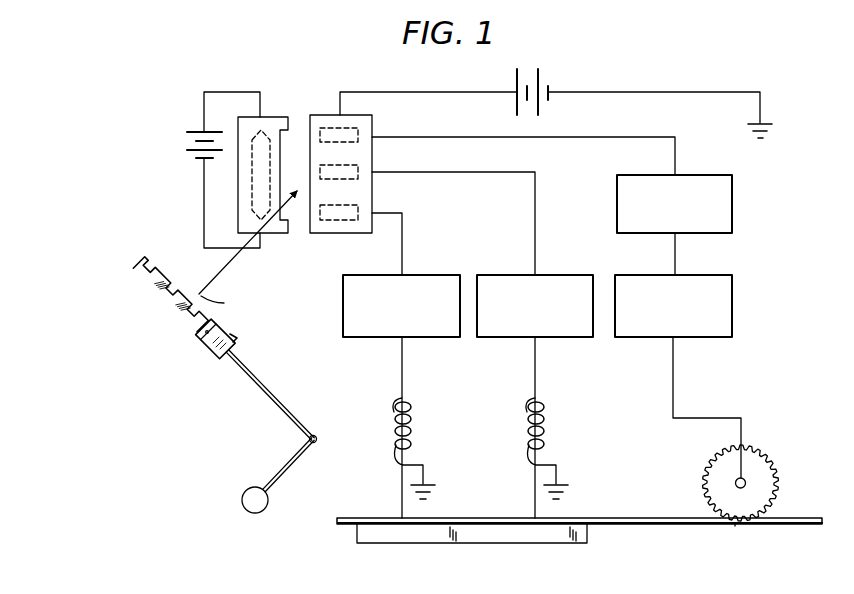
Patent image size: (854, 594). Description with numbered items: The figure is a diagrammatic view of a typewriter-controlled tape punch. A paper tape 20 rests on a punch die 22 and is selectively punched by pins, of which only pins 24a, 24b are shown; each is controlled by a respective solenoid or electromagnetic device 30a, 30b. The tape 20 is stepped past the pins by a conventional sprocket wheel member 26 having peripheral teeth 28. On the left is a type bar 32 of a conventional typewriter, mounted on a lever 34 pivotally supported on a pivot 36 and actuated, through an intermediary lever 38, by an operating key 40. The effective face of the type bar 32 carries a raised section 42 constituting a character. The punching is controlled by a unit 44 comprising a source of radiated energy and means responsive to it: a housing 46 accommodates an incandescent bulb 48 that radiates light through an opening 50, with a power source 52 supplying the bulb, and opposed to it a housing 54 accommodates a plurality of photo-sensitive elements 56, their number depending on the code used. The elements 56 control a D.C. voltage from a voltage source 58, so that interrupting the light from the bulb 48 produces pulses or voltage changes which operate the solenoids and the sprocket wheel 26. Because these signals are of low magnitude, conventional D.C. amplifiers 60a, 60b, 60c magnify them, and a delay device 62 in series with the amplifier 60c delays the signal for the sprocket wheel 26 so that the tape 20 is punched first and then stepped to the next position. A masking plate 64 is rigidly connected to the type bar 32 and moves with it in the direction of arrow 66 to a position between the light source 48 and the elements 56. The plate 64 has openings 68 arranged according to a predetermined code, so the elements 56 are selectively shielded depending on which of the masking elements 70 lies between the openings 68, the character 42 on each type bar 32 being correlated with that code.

The paper tape 20 is at (347, 525).
The punch die 22 is at (516, 543).
The pin 24a is at (401, 507).
The pin 24b is at (534, 507).
The sprocket wheel member 26 is at (775, 482).
The peripheral teeth 28 is at (762, 461).
The solenoid 30a is at (387, 421).
The solenoid 30b is at (519, 423).
The type bar 32 is at (220, 356).
The lever 34 is at (281, 404).
The pivot 36 is at (318, 439).
The lever 38 is at (283, 470).
The operating key 40 is at (244, 508).
The raised section 42 is at (238, 337).
The unit 44 is at (316, 90).
The housing 46 is at (273, 113).
The incandescent bulb 48 is at (248, 178).
The opening 50 is at (282, 138).
The power source 52 is at (184, 140).
The housing 54 is at (372, 123).
The photo-sensitive elements 56 is at (337, 222).
The voltage source 58 is at (538, 71).
The amplifier 60a is at (423, 329).
The amplifier 60b is at (555, 329).
The amplifier 60c is at (693, 329).
The delay device 62 is at (684, 231).
The masking plate 64 is at (205, 300).
The arrow 66 is at (220, 262).
The openings 68 is at (150, 263).
The masking elements 70 is at (155, 289).